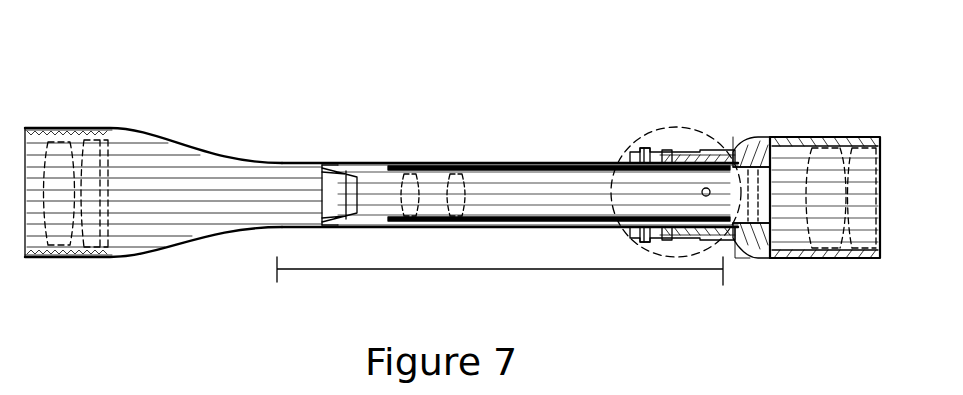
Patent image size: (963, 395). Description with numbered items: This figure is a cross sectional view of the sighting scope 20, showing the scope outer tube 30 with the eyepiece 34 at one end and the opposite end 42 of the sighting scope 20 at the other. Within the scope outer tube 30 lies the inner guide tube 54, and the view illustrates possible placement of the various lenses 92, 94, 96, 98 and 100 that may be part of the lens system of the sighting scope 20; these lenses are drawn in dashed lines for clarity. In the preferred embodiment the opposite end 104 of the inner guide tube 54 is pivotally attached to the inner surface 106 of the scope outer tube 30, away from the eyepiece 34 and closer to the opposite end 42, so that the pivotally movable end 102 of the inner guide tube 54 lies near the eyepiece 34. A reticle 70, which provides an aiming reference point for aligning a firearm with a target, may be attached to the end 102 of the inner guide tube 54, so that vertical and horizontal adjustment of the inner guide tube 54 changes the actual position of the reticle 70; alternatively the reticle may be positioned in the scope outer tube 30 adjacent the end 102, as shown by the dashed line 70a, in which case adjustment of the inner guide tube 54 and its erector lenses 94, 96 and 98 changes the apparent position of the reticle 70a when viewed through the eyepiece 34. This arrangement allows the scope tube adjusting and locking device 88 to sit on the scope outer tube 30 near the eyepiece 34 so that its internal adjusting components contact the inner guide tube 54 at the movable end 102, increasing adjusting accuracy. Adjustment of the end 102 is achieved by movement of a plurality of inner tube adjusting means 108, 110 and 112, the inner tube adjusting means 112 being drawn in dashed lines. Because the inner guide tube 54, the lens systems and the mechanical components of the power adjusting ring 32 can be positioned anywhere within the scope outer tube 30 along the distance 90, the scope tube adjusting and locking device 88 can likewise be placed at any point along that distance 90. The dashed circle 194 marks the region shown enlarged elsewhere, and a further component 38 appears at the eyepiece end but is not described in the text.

The sighting scope 20 is at (62, 50).
The opposite end of the sighting scope 42 is at (38, 257).
The lens 92 is at (92, 131).
The inner surface of the scope outer tube 106 is at (282, 165).
The opposite end of the inner guide tube 104 is at (320, 190).
The erector lens 94 is at (356, 165).
The scope outer tube 30 is at (514, 165).
The inner guide tube 54 is at (560, 165).
The erector lens 96 is at (414, 165).
The erector lens 98 is at (460, 165).
The scope tube adjusting and locking device 88 is at (702, 108).
The power adjusting ring 32 is at (632, 150).
The inner tube adjusting means 108 is at (656, 150).
The inner tube adjusting means 110 is at (642, 242).
The dashed circle 194 is at (666, 148).
The reticle 70 is at (740, 148).
The reticle 70a is at (772, 140).
The lens 100 is at (832, 138).
The eyepiece lens 38 is at (881, 196).
The eyepiece 34 is at (826, 259).
The end of the inner guide tube 102 is at (746, 244).
The inner tube adjusting means 112 is at (735, 248).
The distance 90 is at (575, 270).